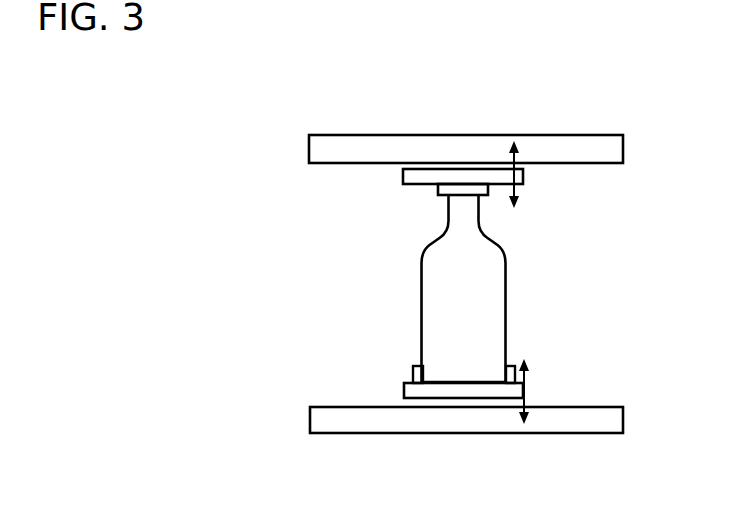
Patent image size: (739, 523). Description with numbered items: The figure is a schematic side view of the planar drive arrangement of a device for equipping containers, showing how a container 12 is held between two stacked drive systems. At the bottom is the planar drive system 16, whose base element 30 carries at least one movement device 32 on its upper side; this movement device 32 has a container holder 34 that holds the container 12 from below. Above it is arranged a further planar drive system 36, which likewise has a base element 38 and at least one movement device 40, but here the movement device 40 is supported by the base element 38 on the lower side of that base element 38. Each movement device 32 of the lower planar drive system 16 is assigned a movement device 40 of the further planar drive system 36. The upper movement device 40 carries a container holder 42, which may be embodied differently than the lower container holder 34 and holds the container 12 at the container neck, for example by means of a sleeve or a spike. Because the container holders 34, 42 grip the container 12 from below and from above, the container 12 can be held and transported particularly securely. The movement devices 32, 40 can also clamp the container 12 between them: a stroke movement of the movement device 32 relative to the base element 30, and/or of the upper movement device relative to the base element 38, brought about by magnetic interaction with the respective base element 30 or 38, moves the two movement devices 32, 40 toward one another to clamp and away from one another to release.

The container 12 is at (423, 313).
The planar drive system 16 is at (363, 355).
The base element 30 is at (310, 412).
The movement device 32 is at (404, 390).
The container holder 34 is at (413, 370).
The further planar drive system 36 is at (355, 215).
The base element 38 is at (309, 150).
The movement device 40 is at (403, 178).
The container holder 42 is at (437, 192).